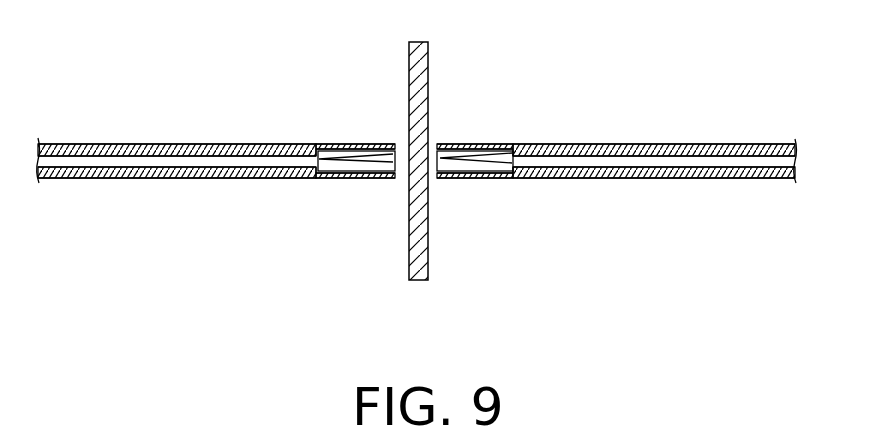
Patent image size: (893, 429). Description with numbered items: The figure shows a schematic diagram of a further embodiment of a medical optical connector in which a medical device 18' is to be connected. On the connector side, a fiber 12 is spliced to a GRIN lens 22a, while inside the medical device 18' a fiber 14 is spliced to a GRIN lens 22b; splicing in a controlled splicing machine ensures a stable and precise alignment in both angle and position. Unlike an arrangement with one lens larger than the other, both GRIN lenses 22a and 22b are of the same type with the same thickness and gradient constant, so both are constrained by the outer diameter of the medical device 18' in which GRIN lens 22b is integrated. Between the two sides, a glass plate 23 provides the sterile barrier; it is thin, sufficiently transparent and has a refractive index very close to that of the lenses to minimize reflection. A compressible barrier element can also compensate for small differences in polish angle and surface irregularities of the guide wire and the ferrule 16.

The fiber 12 is at (165, 160).
The fiber 14 is at (743, 160).
The ferrule 16 is at (82, 170).
The medical device 18' is at (616, 215).
The GRIN lens 22a is at (362, 162).
The GRIN lens 22b is at (483, 162).
The glass plate 23 is at (422, 281).